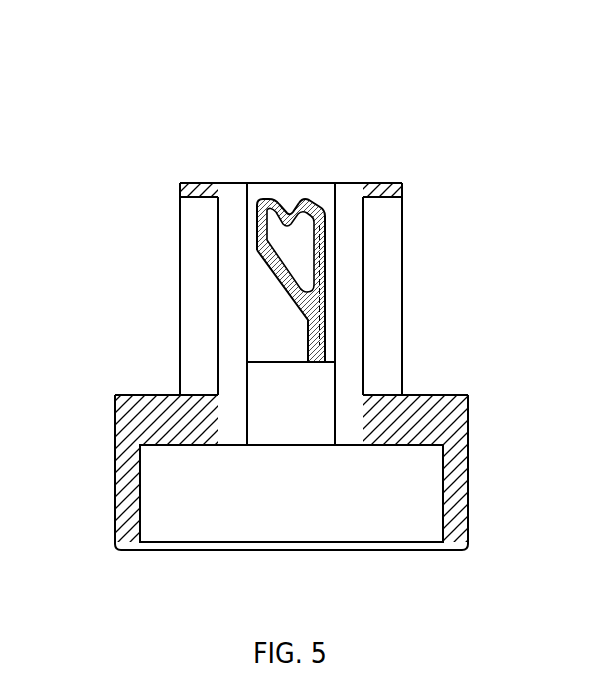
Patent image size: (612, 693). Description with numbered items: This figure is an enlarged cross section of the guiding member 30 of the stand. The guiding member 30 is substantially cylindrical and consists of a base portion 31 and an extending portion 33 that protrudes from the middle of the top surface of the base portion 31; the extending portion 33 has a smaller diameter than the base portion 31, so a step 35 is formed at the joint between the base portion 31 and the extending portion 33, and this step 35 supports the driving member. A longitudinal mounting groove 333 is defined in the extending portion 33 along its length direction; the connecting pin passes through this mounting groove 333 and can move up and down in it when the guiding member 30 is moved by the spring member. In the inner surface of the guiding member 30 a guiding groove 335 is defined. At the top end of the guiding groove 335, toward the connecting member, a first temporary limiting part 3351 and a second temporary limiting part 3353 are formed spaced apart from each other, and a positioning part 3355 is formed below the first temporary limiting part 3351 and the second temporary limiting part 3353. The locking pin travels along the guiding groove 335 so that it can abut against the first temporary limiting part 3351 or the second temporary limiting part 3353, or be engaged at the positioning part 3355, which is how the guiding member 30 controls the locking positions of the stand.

The guiding member 30 is at (400, 120).
The base portion 31 is at (468, 482).
The extending portion 33 is at (402, 285).
The step 35 is at (428, 392).
The mounting groove 333 is at (200, 262).
The guiding groove 335 is at (320, 343).
The first temporary limiting part 3351 is at (303, 213).
The second temporary limiting part 3353 is at (258, 213).
The positioning part 3355 is at (283, 212).